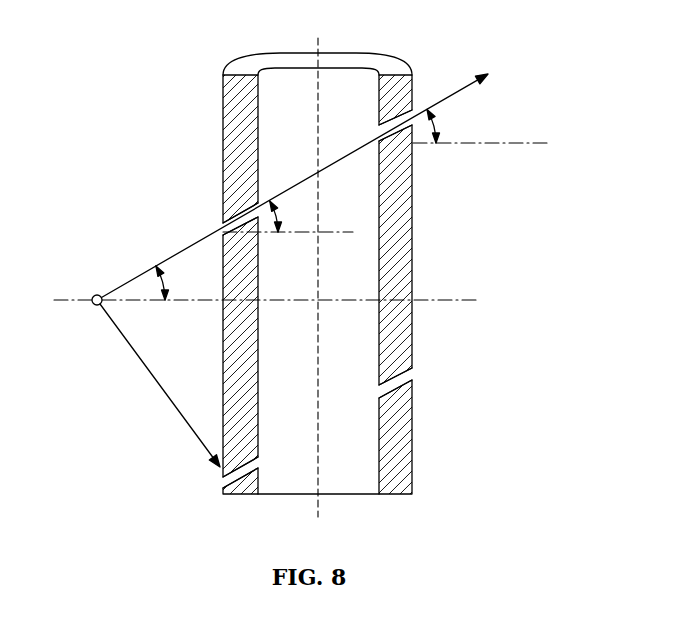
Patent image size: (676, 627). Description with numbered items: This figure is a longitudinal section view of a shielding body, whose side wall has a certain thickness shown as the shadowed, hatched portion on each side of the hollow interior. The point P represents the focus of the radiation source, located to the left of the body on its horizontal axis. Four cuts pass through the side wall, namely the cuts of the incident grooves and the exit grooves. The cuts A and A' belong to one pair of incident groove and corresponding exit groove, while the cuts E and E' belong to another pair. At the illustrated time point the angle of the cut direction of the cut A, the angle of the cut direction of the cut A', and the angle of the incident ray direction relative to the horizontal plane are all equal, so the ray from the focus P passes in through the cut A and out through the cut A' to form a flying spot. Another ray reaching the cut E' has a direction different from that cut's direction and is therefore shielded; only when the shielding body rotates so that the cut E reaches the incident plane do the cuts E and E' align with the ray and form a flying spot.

The focus of the radiation source P is at (91, 319).
The cut of the incident groove A is at (223, 217).
The cut of the exit groove A' is at (379, 125).
The cut of the incident groove E is at (408, 377).
The cut of the exit groove E' is at (179, 401).